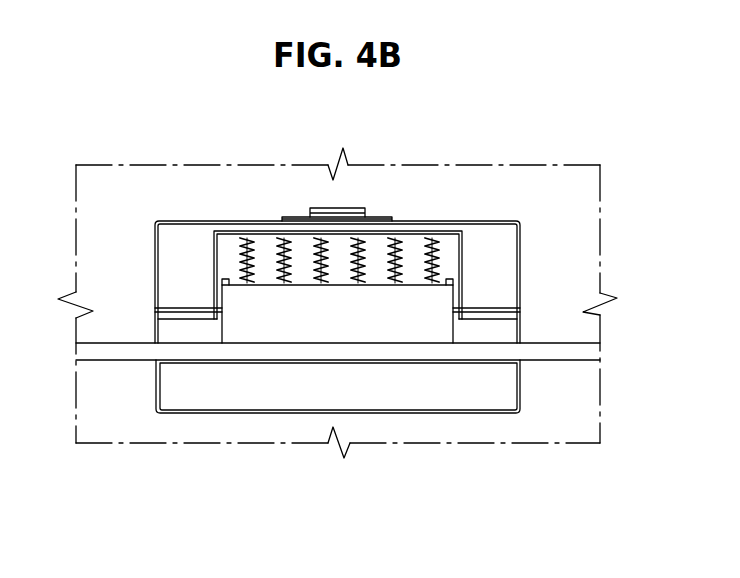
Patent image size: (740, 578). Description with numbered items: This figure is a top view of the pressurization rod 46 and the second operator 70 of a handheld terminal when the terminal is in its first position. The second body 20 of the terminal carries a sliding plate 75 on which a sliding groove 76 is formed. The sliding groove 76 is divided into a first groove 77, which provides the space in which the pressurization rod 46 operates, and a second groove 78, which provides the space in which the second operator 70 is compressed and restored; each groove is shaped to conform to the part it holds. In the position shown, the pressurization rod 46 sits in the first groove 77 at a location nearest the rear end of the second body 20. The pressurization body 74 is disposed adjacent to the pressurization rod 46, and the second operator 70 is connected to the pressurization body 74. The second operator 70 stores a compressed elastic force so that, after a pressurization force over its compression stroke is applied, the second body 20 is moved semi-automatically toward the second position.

The second body 20 is at (560, 407).
The pressurization rod 46 is at (475, 353).
The second operator 70 is at (408, 247).
The pressurization body 74 is at (343, 323).
The sliding plate 75 is at (400, 387).
The sliding groove 76 is at (337, 377).
The first groove 77 is at (182, 330).
The second groove 78 is at (262, 262).